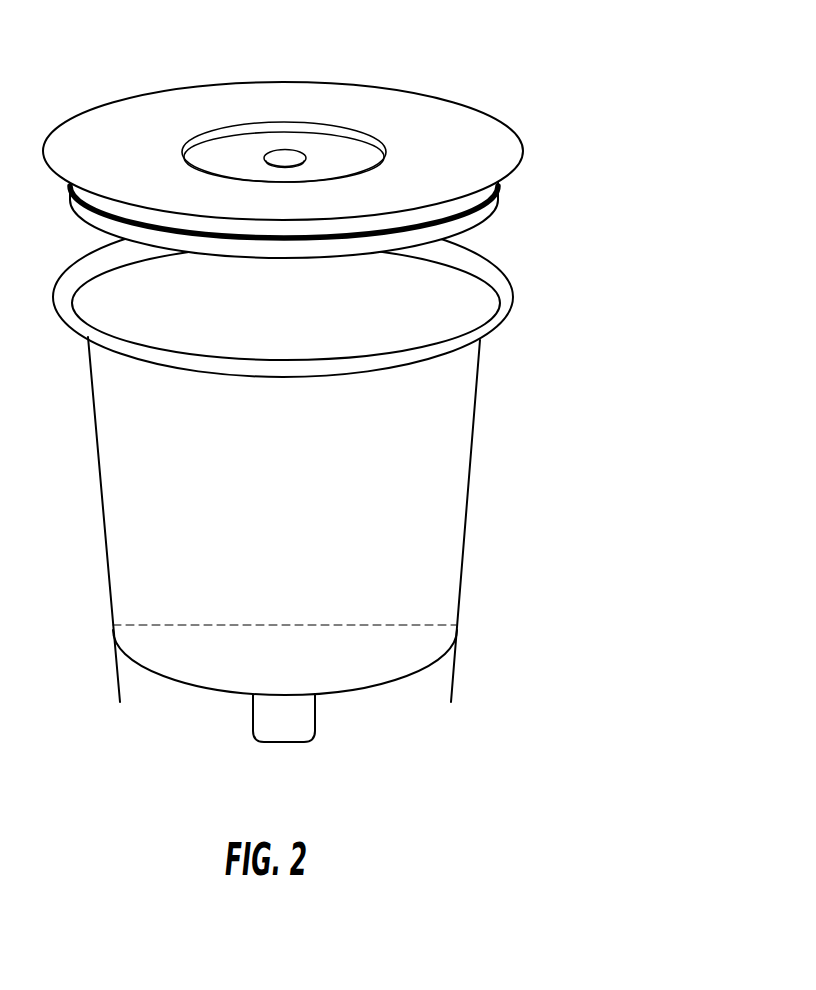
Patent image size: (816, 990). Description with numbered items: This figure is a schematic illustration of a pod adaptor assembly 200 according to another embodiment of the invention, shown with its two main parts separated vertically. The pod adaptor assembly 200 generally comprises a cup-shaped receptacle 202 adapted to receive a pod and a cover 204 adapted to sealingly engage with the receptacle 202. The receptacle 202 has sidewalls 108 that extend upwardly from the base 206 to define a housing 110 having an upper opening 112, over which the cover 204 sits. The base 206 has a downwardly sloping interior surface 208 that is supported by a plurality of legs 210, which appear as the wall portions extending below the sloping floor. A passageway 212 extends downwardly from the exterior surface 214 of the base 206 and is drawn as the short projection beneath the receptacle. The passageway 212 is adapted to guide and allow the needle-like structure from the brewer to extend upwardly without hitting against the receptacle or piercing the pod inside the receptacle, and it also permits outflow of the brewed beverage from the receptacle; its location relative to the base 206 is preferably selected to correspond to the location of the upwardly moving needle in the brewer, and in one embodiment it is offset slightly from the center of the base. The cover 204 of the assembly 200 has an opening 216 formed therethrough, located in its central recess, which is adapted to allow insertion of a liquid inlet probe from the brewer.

The pod adaptor assembly 200 is at (561, 105).
The cup-shaped receptacle 202 is at (543, 433).
The cover 204 is at (447, 100).
The base 206 is at (197, 688).
The downwardly sloping interior surface 208 is at (353, 690).
The legs 210 is at (452, 670).
The passageway 212 is at (293, 745).
The exterior surface 214 is at (368, 686).
The opening 216 is at (285, 156).
The sidewalls 108 is at (457, 528).
The housing 110 is at (237, 432).
The upper opening 112 is at (428, 298).